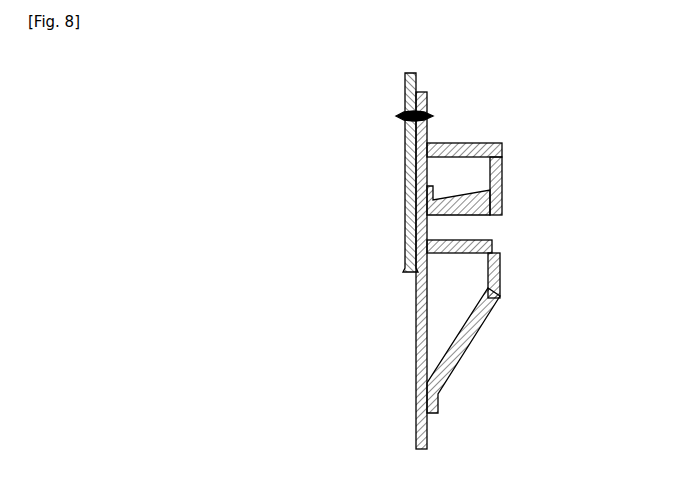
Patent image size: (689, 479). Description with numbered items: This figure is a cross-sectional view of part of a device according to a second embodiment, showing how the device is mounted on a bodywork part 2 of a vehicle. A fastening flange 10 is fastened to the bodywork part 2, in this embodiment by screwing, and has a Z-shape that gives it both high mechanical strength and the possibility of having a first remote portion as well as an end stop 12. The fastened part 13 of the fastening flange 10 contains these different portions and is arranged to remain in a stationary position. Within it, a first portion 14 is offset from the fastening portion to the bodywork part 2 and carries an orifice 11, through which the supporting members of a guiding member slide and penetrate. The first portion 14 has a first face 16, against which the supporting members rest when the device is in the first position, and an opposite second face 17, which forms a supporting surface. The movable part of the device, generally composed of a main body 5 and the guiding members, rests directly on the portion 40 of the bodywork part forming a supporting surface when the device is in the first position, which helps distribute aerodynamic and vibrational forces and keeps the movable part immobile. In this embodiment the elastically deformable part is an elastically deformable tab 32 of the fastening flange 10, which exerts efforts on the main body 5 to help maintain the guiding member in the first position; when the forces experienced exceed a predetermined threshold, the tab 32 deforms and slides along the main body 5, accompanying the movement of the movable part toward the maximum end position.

The bodywork part 2 is at (410, 170).
The main body 5 is at (415, 345).
The fastening flange 10 is at (474, 113).
The orifice 11 is at (508, 226).
The end stop 12 is at (502, 181).
The fastened part 13 is at (470, 143).
The first portion 14 is at (502, 190).
The first face 16 is at (477, 270).
The second face 17 is at (509, 267).
The elastically deformable tab 32 is at (480, 321).
The portion of the bodywork part forming a supporting surface 40 is at (396, 223).